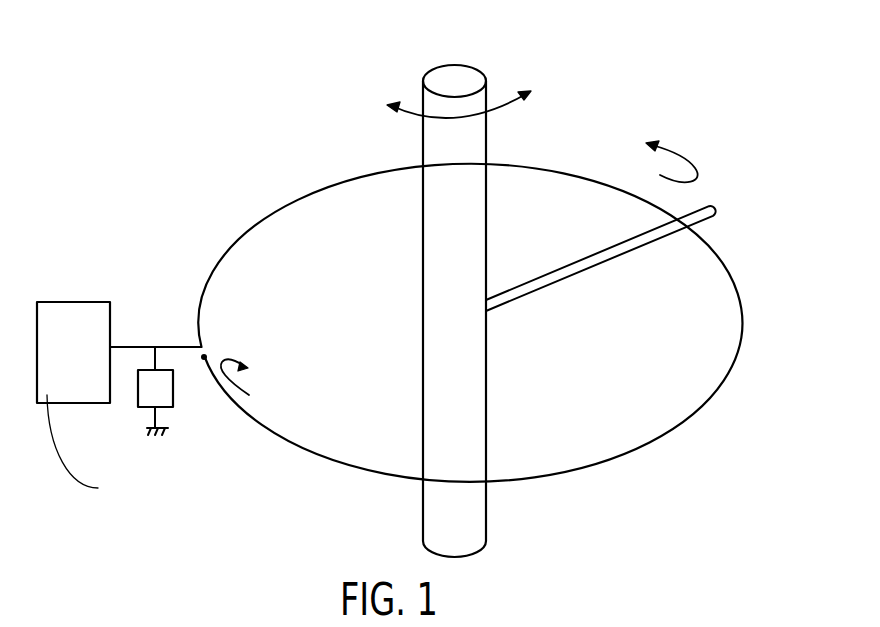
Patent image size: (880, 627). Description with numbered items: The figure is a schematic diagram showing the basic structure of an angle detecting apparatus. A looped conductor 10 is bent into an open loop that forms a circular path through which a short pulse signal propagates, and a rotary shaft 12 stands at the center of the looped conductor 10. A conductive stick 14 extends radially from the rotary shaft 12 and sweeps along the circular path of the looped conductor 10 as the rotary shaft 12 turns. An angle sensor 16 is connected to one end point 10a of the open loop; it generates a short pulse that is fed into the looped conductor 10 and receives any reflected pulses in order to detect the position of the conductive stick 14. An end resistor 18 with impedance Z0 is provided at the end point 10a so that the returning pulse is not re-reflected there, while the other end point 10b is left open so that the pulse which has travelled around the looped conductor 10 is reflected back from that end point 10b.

The looped conductor 10 is at (736, 278).
The end point 10a is at (193, 333).
The other end point 10b is at (211, 355).
The rotary shaft 12 is at (463, 72).
The conductive stick 14 is at (716, 211).
The angle sensor 16 is at (78, 302).
The end resistor 18 is at (138, 401).